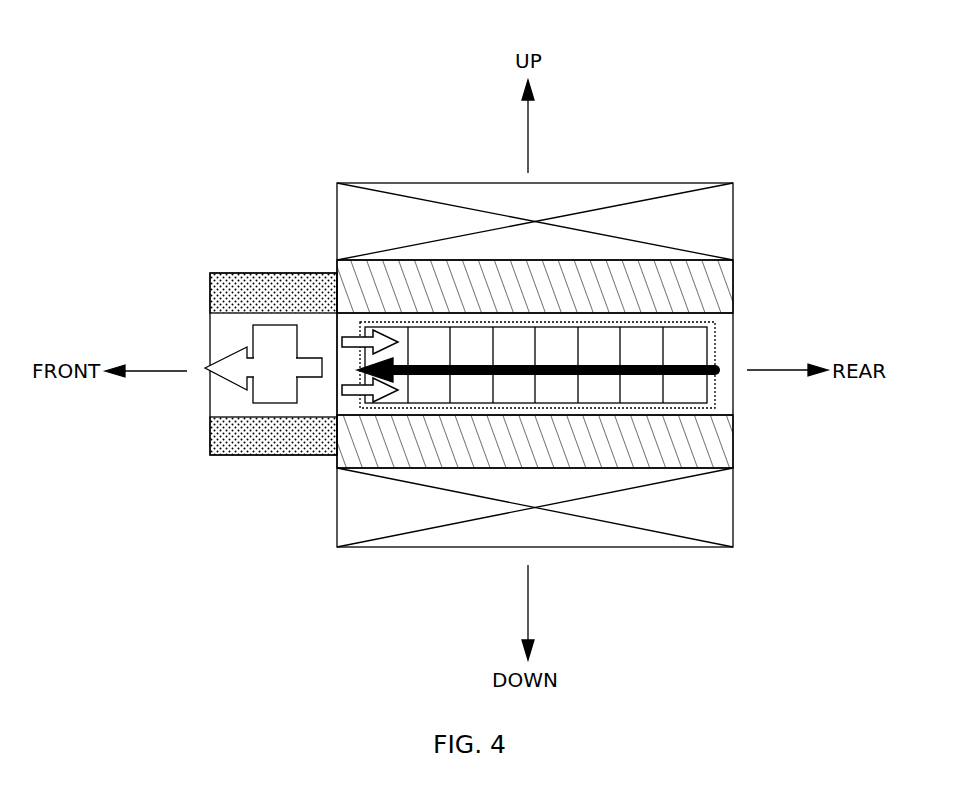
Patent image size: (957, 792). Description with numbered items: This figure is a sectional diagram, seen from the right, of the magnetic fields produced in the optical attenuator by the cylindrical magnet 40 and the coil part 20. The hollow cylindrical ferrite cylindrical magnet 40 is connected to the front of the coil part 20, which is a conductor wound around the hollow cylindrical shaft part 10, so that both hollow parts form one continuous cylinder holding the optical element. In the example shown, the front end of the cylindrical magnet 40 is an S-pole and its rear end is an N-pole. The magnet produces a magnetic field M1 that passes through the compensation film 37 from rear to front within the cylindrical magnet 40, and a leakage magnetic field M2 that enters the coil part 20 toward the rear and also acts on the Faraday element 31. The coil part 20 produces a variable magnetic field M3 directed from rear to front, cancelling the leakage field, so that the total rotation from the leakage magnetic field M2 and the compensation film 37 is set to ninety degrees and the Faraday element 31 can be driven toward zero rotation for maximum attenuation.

The shaft part 10 is at (715, 297).
The coil part 20 is at (490, 190).
The Faraday element 31 is at (715, 392).
The compensation film 37 is at (278, 340).
The cylindrical magnet 40 is at (262, 280).
The magnetic field M1 is at (210, 372).
The leakage magnetic field M2 is at (353, 343).
The variable magnetic field M3 is at (638, 376).